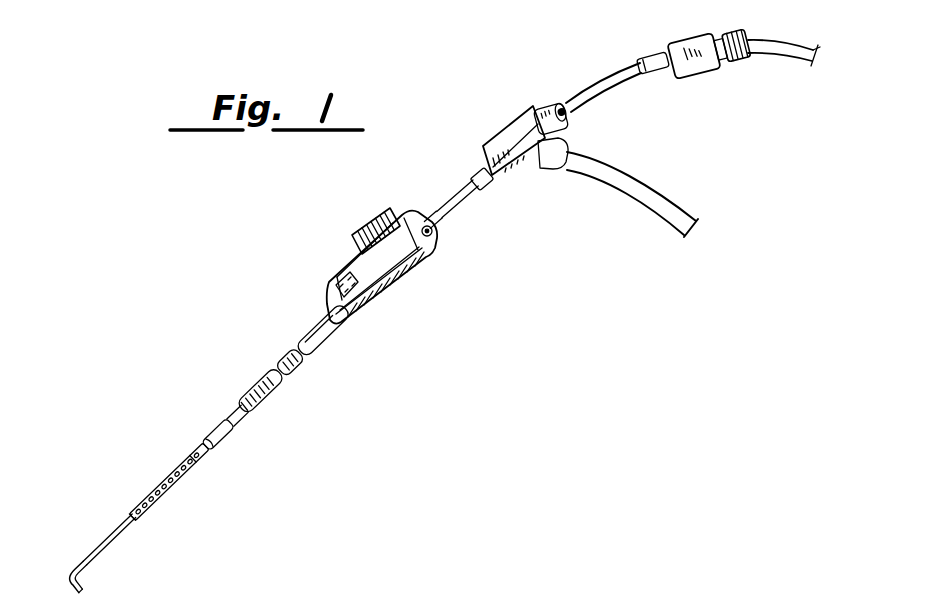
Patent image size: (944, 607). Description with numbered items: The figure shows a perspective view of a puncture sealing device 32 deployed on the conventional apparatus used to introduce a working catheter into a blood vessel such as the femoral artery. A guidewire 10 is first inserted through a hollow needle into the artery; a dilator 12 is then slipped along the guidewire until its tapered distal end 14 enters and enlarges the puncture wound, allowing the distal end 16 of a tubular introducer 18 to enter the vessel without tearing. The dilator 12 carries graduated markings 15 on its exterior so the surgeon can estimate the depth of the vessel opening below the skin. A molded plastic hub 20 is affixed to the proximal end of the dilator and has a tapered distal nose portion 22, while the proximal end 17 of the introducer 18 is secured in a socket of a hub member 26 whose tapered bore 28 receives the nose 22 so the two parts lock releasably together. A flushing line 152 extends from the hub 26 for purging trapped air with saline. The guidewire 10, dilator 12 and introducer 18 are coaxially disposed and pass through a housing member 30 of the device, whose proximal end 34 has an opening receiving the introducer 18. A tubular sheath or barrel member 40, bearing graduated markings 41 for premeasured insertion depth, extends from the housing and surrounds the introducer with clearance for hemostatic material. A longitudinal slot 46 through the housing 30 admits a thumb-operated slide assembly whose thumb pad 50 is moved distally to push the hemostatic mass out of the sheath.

The guidewire 10 is at (87, 565).
The dilator 12 is at (150, 513).
The tapered distal end of the dilator 14 is at (132, 518).
The graduated markings on the dilator 15 is at (193, 470).
The distal end of the tubular introducer 16 is at (207, 442).
The proximal end of the tubular introducer 17 is at (463, 203).
The tubular introducer 18 is at (233, 427).
The hub of the dilator 20 is at (687, 33).
The tapered distal nose portion 22 is at (650, 57).
The hub member of the introducer 26 is at (513, 140).
The tapered bore 28 is at (553, 110).
The housing member 30 is at (410, 258).
The puncture sealing device 32 is at (405, 291).
The proximal end of the housing 34 is at (410, 217).
The tubular sheath 40 is at (300, 347).
The graduated markings on the sheath 41 is at (263, 387).
The longitudinal slot 46 is at (337, 272).
The thumb pad 50 is at (373, 232).
The flushing line 152 is at (650, 187).